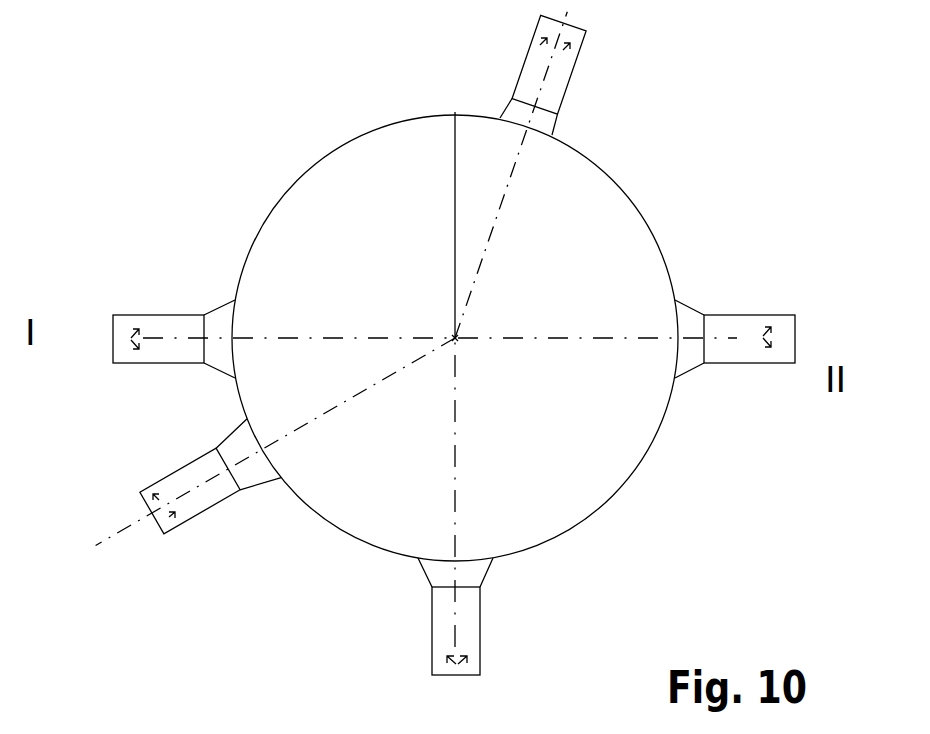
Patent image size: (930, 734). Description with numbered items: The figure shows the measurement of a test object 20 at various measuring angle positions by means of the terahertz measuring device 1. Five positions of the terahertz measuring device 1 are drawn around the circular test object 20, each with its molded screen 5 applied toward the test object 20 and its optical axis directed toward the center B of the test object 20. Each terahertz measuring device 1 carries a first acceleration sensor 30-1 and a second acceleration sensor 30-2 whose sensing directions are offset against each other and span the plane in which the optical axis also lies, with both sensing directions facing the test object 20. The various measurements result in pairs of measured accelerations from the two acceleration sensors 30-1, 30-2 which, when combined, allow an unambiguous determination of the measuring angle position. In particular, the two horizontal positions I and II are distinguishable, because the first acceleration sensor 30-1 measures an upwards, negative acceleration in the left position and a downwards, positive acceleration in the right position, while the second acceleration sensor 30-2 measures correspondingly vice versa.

The terahertz measuring device 1 is at (113, 316).
The molded screen 5 is at (230, 305).
The test object 20 is at (272, 212).
The first acceleration sensor 30-1 is at (135, 330).
The second acceleration sensor 30-2 is at (135, 350).
The center point B is at (455, 338).